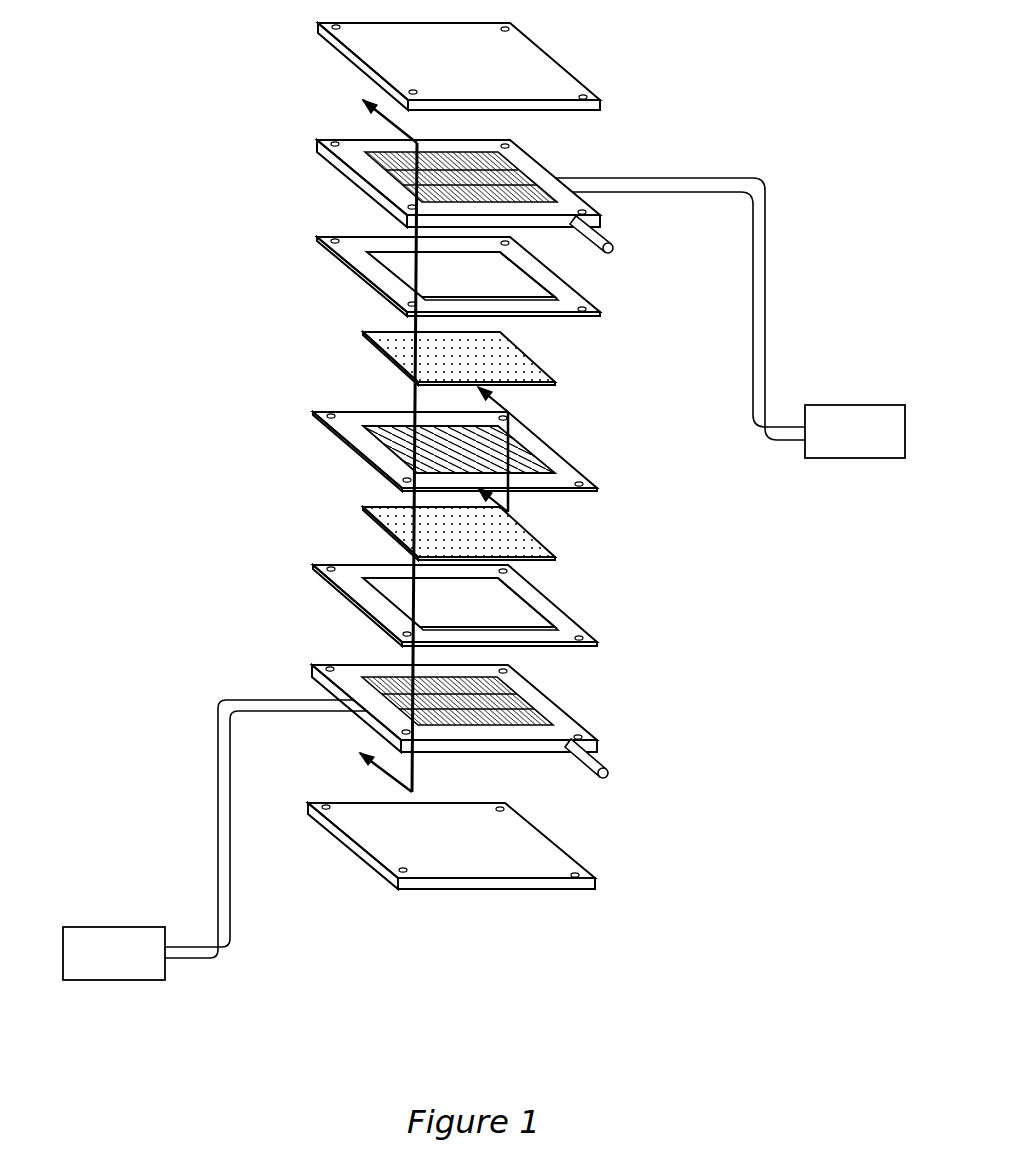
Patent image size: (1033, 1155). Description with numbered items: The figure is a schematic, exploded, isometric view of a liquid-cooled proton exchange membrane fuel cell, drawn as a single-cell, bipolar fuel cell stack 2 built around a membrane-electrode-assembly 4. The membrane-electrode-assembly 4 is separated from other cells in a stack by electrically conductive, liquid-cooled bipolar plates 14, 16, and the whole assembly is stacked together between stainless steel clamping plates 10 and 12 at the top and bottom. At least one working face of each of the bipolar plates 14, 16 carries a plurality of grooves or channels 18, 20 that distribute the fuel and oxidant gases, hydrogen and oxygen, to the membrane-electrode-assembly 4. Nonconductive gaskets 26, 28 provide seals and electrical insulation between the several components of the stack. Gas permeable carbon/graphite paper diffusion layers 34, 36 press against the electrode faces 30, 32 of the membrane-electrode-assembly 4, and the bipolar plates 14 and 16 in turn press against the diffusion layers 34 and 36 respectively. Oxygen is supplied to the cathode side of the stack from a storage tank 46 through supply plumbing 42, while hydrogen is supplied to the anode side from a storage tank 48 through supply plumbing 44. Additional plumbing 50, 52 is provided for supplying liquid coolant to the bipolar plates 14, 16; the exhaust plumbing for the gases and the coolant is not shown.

The fuel cell stack 2 is at (780, 83).
The membrane-electrode-assembly 4 is at (350, 454).
The clamping plate 10 is at (325, 47).
The clamping plate 12 is at (556, 837).
The bipolar plate 14 is at (325, 170).
The bipolar plate 16 is at (333, 679).
The channels 18 is at (400, 178).
The channels 20 is at (400, 707).
The gasket 26 is at (378, 280).
The gasket 28 is at (350, 580).
The electrode face 30 is at (555, 448).
The electrode face 32 is at (562, 492).
The diffusion layer 34 is at (382, 342).
The diffusion layer 36 is at (393, 520).
The supply plumbing 42 is at (760, 260).
The supply plumbing 44 is at (223, 757).
The storage tank 46 is at (880, 408).
The storage tank 48 is at (83, 928).
The coolant plumbing 50 is at (603, 242).
The coolant plumbing 52 is at (598, 757).